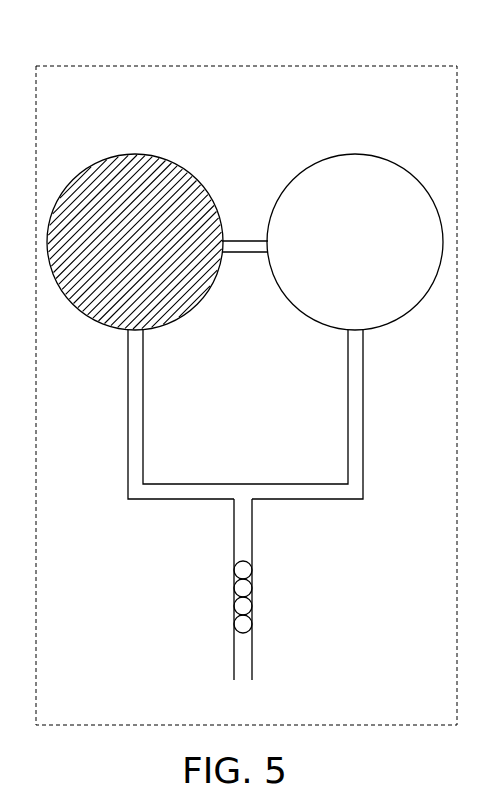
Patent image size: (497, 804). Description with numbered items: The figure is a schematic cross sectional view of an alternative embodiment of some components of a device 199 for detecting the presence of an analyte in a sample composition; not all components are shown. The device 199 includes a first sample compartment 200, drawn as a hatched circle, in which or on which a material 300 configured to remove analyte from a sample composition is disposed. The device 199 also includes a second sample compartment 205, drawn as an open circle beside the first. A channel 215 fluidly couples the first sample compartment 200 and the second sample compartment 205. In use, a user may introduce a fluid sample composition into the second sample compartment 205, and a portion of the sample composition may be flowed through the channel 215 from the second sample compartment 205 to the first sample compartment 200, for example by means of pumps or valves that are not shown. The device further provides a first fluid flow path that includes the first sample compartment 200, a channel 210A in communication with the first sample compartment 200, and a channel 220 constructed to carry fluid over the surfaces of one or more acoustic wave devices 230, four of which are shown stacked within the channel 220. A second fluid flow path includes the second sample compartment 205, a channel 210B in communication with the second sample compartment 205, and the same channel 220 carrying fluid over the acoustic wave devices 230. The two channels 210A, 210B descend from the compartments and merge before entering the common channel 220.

The device 199 is at (288, 62).
The first sample compartment 200 is at (167, 210).
The second sample compartment 205 is at (355, 154).
The channel 210A is at (143, 372).
The channel 210B is at (348, 357).
The channel 215 is at (255, 253).
The channel 220 is at (253, 517).
The acoustic wave devices 230 is at (221, 596).
The material configured to remove analyte 300 is at (208, 224).